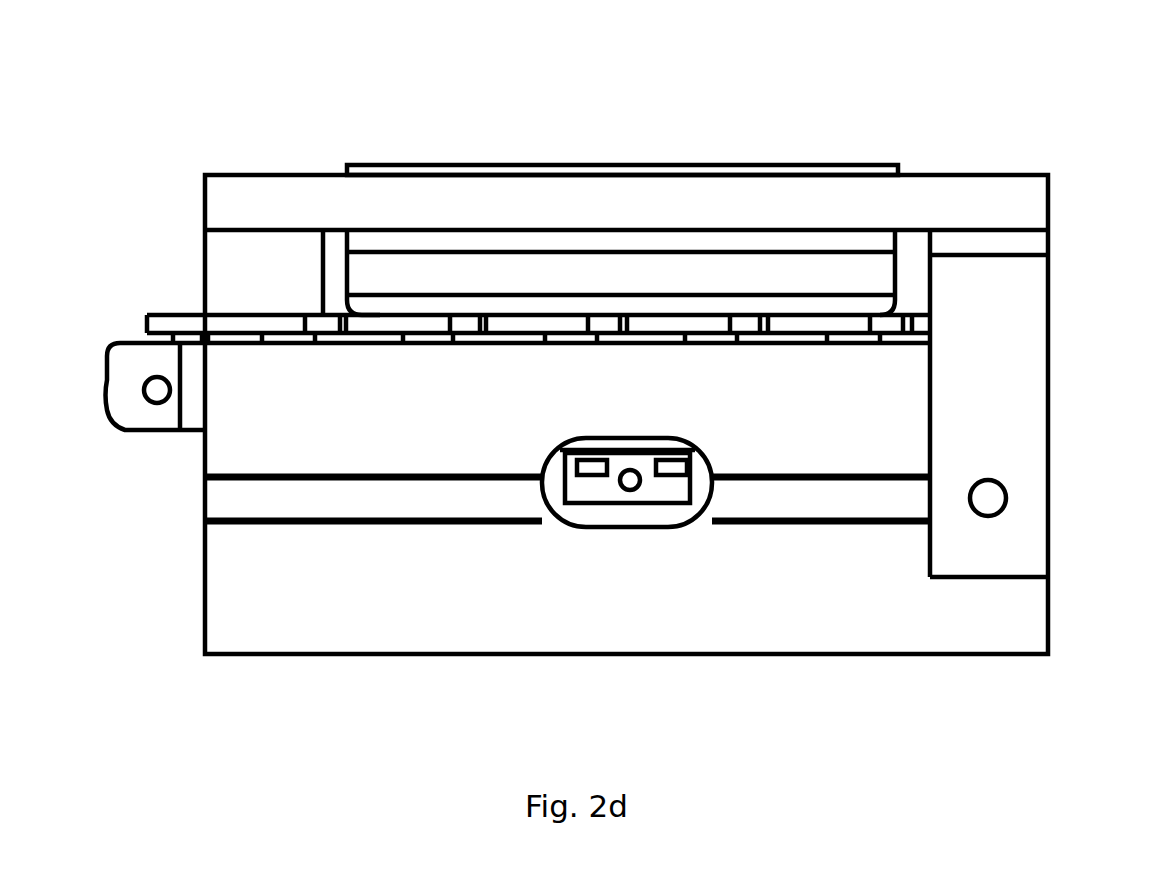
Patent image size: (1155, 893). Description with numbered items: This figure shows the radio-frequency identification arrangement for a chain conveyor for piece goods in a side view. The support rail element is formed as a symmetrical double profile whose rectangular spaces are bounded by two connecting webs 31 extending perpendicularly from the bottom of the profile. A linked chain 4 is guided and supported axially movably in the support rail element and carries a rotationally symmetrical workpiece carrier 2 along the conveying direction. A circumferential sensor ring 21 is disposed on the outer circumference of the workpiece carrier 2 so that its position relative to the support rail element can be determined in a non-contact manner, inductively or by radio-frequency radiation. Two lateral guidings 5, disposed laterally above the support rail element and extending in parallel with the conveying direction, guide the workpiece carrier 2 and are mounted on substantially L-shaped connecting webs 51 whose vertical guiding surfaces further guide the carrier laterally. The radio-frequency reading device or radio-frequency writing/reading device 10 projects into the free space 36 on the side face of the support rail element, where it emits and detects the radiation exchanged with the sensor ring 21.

The workpiece carrier 2 is at (632, 245).
The circumferential sensor ring 21 is at (730, 278).
The linked chain 4 is at (397, 325).
The lateral guiding 5 is at (993, 193).
The L-shaped connecting web 51 is at (1020, 413).
The connecting web 31 is at (230, 428).
The radio-frequency writing/reading device 10 is at (610, 493).
The free space 36 is at (673, 517).